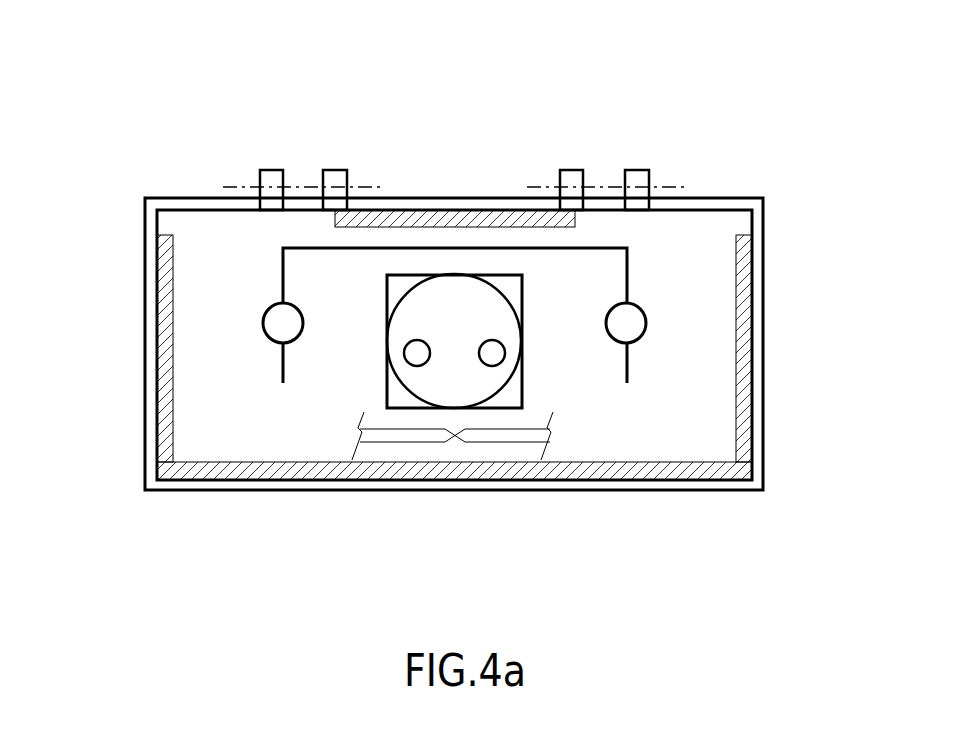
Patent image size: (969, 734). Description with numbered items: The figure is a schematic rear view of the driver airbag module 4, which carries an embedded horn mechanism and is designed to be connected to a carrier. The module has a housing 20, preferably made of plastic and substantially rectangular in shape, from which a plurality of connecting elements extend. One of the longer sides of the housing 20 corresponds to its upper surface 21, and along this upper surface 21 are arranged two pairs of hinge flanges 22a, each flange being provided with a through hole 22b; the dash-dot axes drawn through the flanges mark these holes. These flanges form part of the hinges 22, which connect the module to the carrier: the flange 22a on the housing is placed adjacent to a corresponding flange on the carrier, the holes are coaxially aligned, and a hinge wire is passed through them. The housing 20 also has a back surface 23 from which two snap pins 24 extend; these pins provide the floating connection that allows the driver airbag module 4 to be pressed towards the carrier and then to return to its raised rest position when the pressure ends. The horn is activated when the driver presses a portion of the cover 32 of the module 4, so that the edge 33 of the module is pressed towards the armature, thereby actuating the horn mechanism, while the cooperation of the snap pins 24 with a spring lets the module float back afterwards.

The driver airbag module 4 is at (132, 388).
The housing 20 is at (745, 410).
The upper surface 21 is at (428, 206).
The hinge 22 is at (455, 129).
The hinge flange 22a is at (268, 170).
The through hole 22b is at (260, 184).
The back surface 23 is at (327, 385).
The snap pin 24 is at (280, 325).
The cover 32 is at (762, 266).
The edge 33 is at (540, 480).